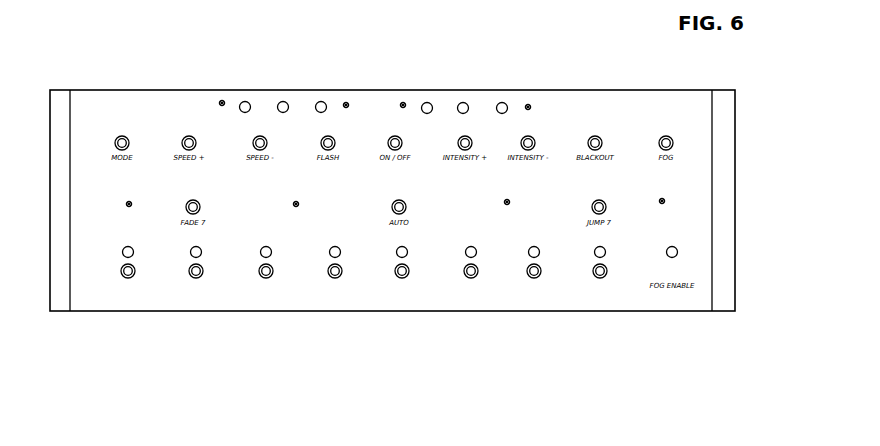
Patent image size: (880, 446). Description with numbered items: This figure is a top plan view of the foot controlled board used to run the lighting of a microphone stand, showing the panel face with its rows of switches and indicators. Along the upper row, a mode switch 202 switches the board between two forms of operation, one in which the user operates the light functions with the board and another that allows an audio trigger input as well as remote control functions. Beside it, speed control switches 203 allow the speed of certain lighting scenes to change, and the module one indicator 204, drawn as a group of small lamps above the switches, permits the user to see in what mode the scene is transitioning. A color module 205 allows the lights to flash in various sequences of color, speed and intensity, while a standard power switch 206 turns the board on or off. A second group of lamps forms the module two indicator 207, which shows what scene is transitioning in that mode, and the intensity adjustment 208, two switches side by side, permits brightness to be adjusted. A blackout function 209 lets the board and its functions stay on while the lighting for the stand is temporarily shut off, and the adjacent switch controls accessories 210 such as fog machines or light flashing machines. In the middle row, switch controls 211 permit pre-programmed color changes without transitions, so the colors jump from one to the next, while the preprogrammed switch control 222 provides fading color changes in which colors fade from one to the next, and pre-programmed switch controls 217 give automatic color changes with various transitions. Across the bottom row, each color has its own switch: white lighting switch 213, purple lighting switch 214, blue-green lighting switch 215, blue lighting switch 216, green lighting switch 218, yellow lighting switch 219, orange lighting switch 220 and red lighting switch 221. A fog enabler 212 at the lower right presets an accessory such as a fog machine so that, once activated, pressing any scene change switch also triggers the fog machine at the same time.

The mode switch 202 is at (113, 137).
The speed control switches 203 is at (247, 135).
The module one indicator 204 is at (314, 101).
The color module 205 is at (333, 134).
The power switch 206 is at (390, 133).
The module two indicator 207 is at (430, 100).
The intensity adjustment 208 is at (479, 135).
The blackout function 209 is at (605, 135).
The accessories 210 is at (672, 132).
The switch controls 211 is at (611, 209).
The fog enabler 212 is at (683, 253).
The white lighting switch 213 is at (607, 258).
The purple lighting switch 214 is at (543, 258).
The blue-green lighting switch 215 is at (480, 258).
The blue lighting switch 216 is at (409, 258).
The pre-programmed switch controls 217 is at (387, 212).
The green lighting switch 218 is at (327, 260).
The yellow lighting switch 219 is at (257, 258).
The orange lighting switch 220 is at (187, 258).
The red lighting switch 221 is at (120, 257).
The preprogrammed switch control 222 is at (182, 210).